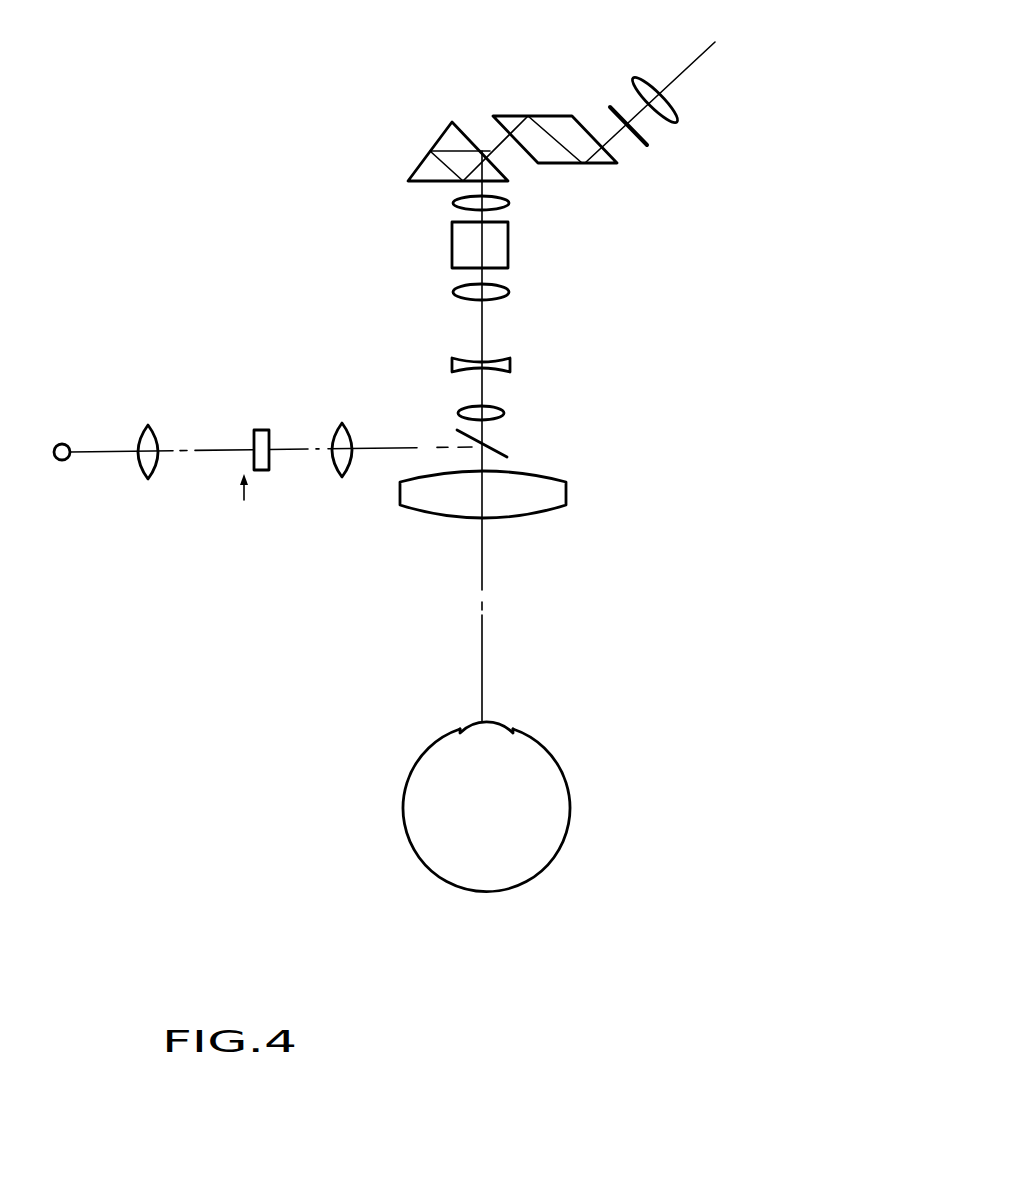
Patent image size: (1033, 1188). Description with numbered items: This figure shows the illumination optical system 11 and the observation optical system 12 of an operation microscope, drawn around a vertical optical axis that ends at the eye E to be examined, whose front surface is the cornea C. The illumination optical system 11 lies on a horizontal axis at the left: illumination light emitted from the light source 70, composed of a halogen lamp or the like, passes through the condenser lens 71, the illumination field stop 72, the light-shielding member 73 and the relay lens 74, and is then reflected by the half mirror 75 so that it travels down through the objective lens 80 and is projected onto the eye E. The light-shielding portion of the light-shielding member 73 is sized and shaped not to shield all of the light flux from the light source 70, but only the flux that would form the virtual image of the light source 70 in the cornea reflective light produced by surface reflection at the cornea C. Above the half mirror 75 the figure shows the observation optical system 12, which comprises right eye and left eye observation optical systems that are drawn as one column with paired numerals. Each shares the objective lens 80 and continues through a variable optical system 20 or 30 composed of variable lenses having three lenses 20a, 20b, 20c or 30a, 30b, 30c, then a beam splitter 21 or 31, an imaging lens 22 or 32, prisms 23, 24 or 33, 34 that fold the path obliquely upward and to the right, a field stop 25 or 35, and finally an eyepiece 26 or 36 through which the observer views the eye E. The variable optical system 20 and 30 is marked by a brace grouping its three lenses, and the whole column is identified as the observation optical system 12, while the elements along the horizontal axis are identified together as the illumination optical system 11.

The illumination optical system 11 is at (194, 518).
The observation optical system 12 is at (718, 247).
The variable optical system 20 is at (658, 348).
The variable optical system 30 is at (658, 348).
The lens 20a is at (589, 400).
The lens 20b is at (586, 349).
The lens 20c is at (586, 295).
The lens 30a is at (505, 412).
The lens 30b is at (510, 365).
The lens 30c is at (508, 292).
The beam splitter 21 is at (564, 245).
The beam splitter 31 is at (508, 240).
The imaging lens 22 is at (565, 205).
The imaging lens 32 is at (508, 202).
The prism 23 is at (400, 137).
The prism 33 is at (441, 133).
The prism 24 is at (527, 105).
The prism 34 is at (530, 116).
The field stop 25 is at (714, 141).
The field stop 35 is at (633, 127).
The eyepiece 26 is at (613, 65).
The eyepiece 36 is at (635, 78).
The light source 70 is at (62, 460).
The condenser lens 71 is at (150, 427).
The illumination field stop 72 is at (245, 420).
The light-shielding member 73 is at (260, 472).
The relay lens 74 is at (343, 423).
The half mirror 75 is at (507, 452).
The objective lens 80 is at (567, 490).
The cornea C is at (508, 725).
The eye E is at (568, 795).